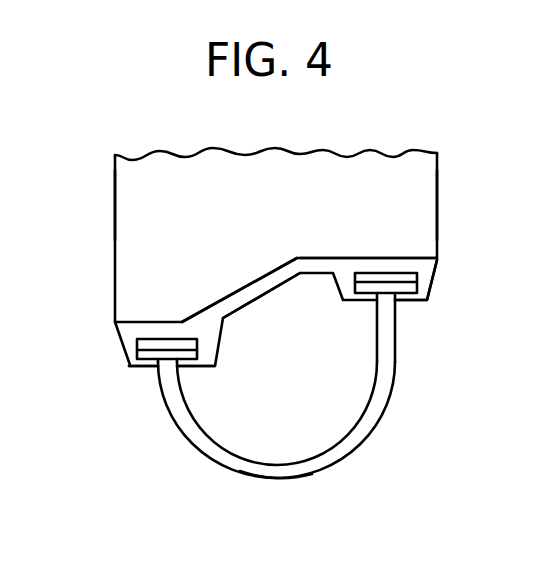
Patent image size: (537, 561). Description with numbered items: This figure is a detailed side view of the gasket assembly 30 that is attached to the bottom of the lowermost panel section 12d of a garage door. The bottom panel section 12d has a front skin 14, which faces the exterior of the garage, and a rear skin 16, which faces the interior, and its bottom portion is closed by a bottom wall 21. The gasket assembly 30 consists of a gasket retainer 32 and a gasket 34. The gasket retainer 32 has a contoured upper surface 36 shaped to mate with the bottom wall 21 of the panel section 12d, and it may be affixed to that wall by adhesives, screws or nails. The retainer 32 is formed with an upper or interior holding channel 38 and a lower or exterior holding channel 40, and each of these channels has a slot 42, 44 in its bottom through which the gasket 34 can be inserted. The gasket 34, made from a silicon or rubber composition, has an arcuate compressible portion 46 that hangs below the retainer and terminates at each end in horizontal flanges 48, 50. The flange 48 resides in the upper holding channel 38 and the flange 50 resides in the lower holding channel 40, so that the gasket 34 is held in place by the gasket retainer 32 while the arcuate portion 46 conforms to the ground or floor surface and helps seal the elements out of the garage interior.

The bottom panel section 12d is at (217, 213).
The front skin 14 is at (115, 205).
The rear skin 16 is at (437, 190).
The bottom wall 21 is at (355, 258).
The gasket assembly 30 is at (117, 390).
The gasket retainer 32 is at (277, 289).
The gasket 34 is at (335, 462).
The contoured upper surface 36 is at (231, 300).
The upper holding channel 38 is at (421, 292).
The lower holding channel 40 is at (137, 349).
The slot 42 is at (397, 306).
The slot 44 is at (178, 366).
The arcuate compressible portion 46 is at (283, 479).
The horizontal flange 48 is at (420, 300).
The horizontal flange 50 is at (130, 366).